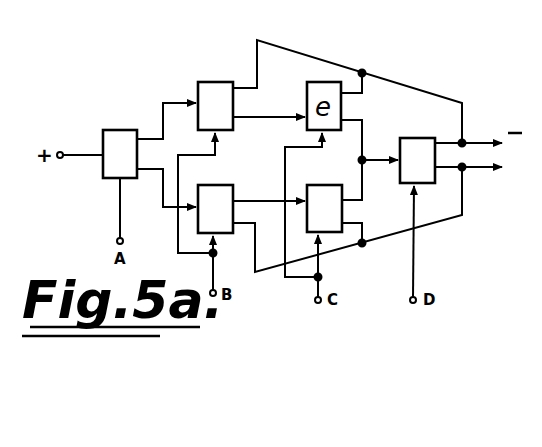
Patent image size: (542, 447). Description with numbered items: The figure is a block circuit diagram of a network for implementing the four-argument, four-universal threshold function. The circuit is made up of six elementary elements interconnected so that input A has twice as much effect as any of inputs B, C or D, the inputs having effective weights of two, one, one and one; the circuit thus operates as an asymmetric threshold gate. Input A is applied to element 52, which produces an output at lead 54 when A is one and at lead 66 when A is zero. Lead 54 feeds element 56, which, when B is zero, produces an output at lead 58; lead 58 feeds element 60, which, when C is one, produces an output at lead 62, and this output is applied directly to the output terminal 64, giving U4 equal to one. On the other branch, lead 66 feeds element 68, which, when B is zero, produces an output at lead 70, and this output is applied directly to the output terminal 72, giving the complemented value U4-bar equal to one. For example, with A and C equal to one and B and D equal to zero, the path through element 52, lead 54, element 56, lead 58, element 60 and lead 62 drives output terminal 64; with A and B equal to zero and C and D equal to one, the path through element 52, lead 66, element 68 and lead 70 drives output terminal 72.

The element 52 is at (123, 126).
The lead 54 is at (163, 196).
The element 56 is at (233, 184).
The lead 58 is at (256, 199).
The element 60 is at (328, 184).
The lead 62 is at (364, 241).
The output terminal 64 is at (463, 169).
The lead 66 is at (174, 91).
The element 68 is at (212, 80).
The lead 70 is at (272, 49).
The output terminal 72 is at (463, 142).